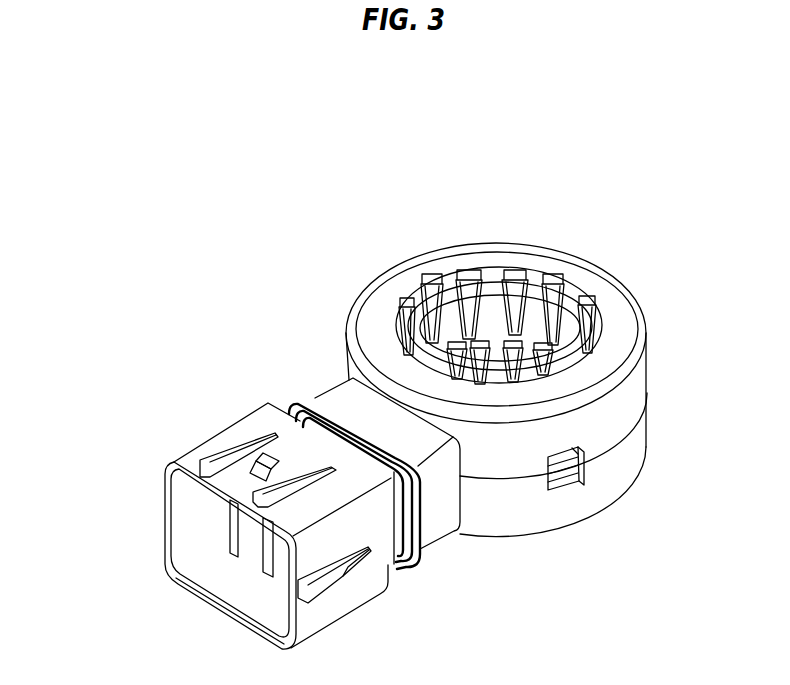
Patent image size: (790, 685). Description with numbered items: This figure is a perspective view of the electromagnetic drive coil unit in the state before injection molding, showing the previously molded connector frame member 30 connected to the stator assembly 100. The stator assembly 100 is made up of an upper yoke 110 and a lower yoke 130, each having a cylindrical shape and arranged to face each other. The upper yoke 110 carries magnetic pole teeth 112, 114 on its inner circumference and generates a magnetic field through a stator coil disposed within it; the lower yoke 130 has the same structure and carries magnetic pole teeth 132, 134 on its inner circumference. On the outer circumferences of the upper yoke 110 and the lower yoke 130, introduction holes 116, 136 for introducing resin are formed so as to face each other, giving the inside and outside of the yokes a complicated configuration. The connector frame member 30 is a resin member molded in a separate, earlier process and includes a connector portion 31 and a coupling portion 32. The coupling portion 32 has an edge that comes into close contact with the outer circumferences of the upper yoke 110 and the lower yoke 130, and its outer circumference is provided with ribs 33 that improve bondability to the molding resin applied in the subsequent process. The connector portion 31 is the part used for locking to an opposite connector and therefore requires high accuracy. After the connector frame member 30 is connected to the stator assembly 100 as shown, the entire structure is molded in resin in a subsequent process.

The stator assembly 100 is at (610, 167).
The upper yoke 110 is at (535, 260).
The magnetic pole tooth 112 is at (490, 297).
The magnetic pole tooth 114 is at (467, 308).
The introduction hole 116 is at (580, 461).
The lower yoke 130 is at (575, 512).
The magnetic pole tooth 132 is at (523, 363).
The magnetic pole tooth 134 is at (521, 328).
The introduction hole 136 is at (580, 478).
The connector frame member 30 is at (137, 412).
The connector portion 31 is at (218, 445).
The coupling portion 32 is at (343, 393).
The rib 33 is at (294, 403).